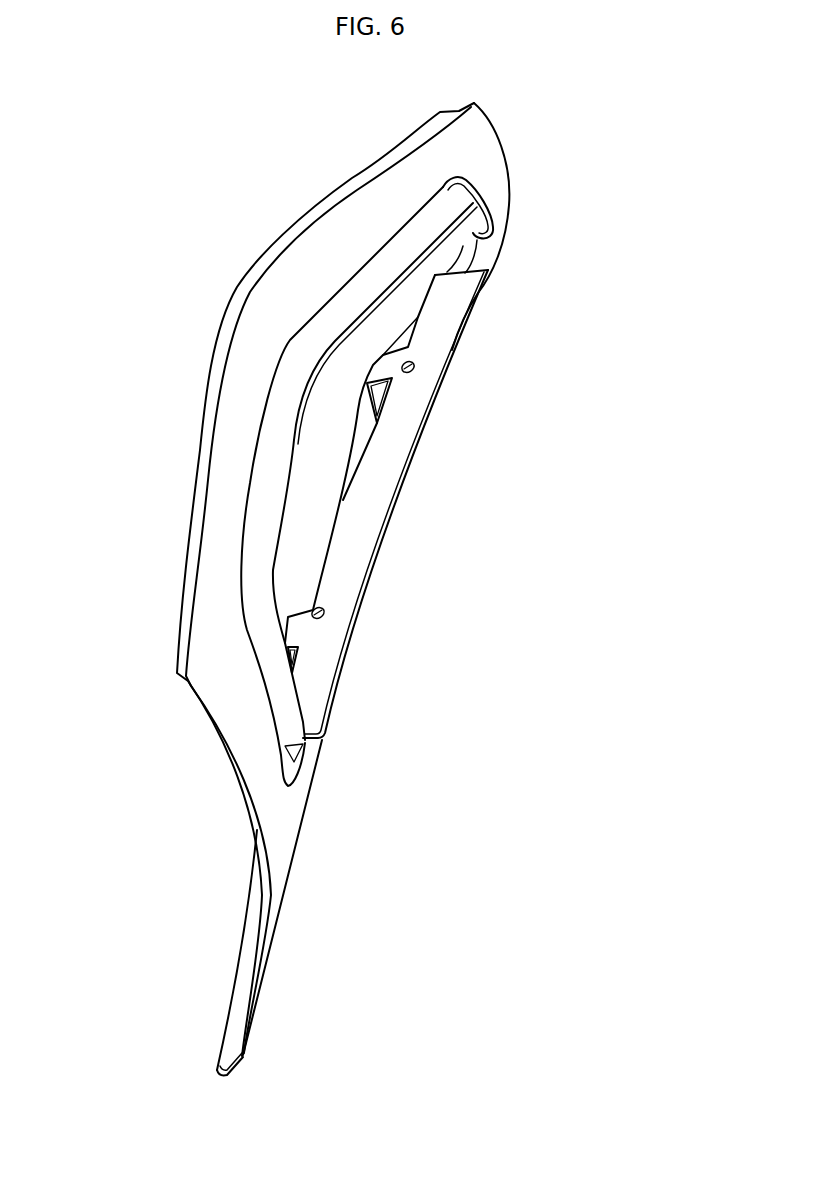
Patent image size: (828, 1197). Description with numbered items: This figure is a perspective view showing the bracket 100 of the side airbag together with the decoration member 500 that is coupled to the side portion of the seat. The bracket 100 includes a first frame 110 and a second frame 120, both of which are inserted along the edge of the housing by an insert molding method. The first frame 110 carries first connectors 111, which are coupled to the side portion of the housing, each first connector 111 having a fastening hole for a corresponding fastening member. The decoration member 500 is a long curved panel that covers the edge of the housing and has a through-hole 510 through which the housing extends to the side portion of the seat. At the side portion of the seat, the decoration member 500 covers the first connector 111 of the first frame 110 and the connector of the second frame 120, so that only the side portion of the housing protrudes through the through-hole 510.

The bracket 100 is at (483, 457).
The first frame 110 is at (451, 504).
The first connector 111 is at (380, 390).
The second frame 120 is at (414, 228).
The decoration member 500 is at (262, 331).
The through-hole 510 is at (377, 245).